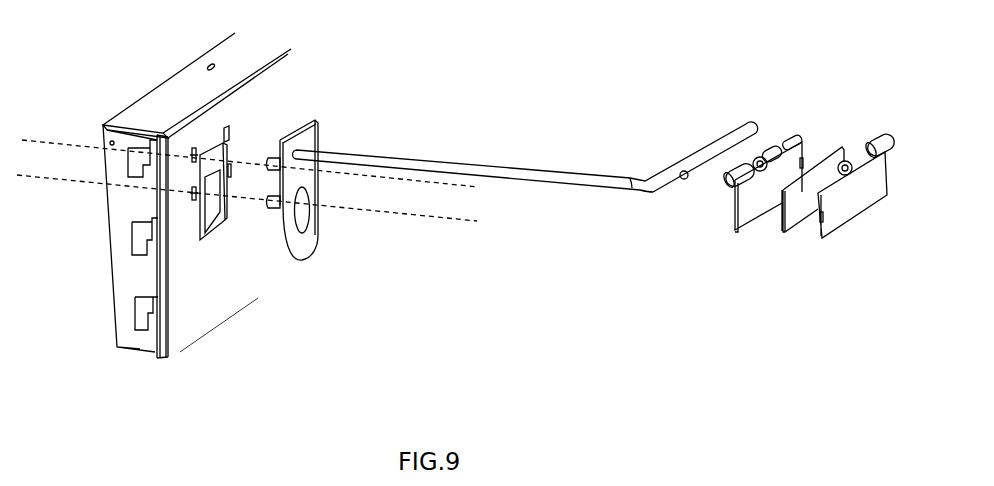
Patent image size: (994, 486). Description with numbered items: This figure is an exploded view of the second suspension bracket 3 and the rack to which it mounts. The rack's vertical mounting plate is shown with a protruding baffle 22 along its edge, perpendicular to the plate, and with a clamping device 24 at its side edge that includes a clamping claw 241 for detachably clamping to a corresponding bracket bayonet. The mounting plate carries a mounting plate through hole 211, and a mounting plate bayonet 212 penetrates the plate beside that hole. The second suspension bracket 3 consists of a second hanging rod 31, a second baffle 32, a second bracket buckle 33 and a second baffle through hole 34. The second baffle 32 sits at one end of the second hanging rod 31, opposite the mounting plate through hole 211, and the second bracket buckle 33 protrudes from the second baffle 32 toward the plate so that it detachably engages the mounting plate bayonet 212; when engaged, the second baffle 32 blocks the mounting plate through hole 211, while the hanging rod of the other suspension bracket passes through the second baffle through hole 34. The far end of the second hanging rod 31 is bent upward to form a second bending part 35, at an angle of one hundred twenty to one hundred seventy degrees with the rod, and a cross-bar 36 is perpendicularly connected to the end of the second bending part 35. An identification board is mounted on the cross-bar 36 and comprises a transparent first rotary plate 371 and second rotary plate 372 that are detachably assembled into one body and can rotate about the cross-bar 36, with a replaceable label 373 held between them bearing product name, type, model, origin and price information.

The second suspension bracket 3 is at (352, 95).
The baffle 22 is at (125, 257).
The clamping device 24 is at (168, 300).
The clamping claw 241 is at (145, 307).
The mounting plate through hole 211 is at (213, 157).
The mounting plate bayonet 212 is at (230, 128).
The second hanging rod 31 is at (497, 170).
The second baffle 32 is at (307, 245).
The second bracket buckle 33 is at (274, 157).
The second baffle through hole 34 is at (305, 213).
The second bending part 35 is at (660, 173).
The cross-bar 36 is at (747, 125).
The first rotary plate 371 is at (745, 213).
The second rotary plate 372 is at (853, 198).
The label 373 is at (792, 213).